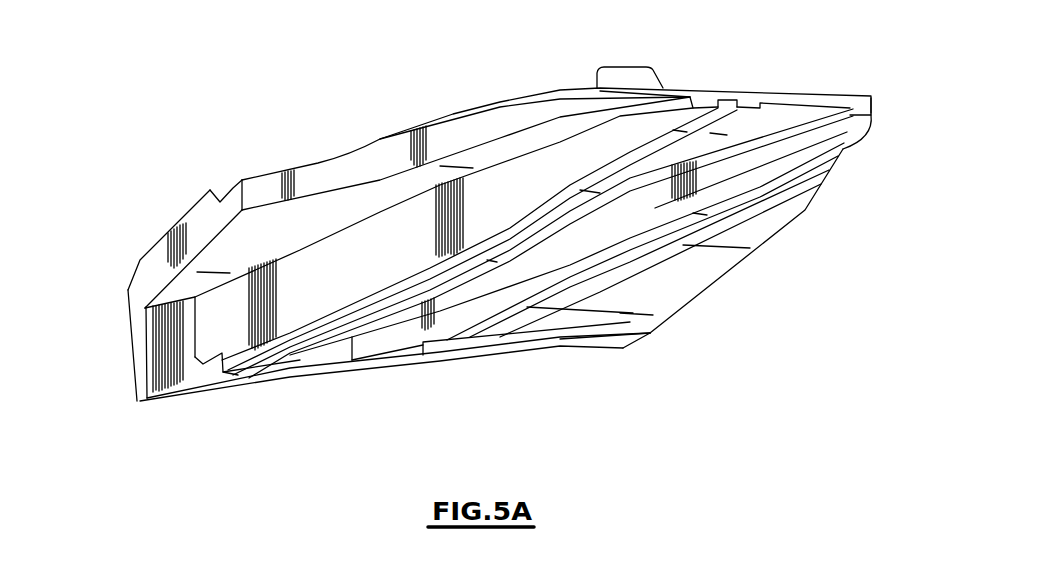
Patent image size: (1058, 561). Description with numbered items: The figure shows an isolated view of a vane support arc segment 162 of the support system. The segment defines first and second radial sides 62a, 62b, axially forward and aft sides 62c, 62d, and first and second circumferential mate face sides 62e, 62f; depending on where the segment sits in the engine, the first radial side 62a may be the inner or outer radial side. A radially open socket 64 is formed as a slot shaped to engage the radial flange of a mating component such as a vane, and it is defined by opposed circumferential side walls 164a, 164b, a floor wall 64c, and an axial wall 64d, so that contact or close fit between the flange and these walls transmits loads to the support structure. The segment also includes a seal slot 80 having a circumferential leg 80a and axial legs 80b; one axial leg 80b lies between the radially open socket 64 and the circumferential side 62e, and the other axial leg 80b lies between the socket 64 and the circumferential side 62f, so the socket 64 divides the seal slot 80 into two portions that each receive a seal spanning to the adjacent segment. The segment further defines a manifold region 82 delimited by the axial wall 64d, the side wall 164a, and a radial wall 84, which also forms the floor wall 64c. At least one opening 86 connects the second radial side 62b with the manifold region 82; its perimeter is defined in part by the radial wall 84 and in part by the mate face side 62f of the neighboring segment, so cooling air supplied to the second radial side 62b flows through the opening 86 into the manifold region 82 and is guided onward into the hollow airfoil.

The first radial side 62a is at (612, 323).
The second radial side 62b is at (221, 195).
The axially forward side 62c is at (787, 97).
The axially aft side 62d is at (136, 365).
The first circumferential mate face side 62e is at (146, 273).
The second circumferential mate face side 62f is at (875, 108).
The radially open socket 64 is at (381, 326).
The floor wall 64c is at (783, 113).
The axial wall 64d is at (320, 360).
The seal slot 80 is at (482, 340).
The circumferential leg 80a is at (215, 368).
The axial legs 80b is at (733, 101).
The manifold region 82 is at (212, 300).
The radial wall 84 is at (258, 228).
The opening 86 is at (367, 165).
The vane support arc segment 162 is at (803, 208).
The circumferential side wall 164a is at (295, 365).
The circumferential side wall 164b is at (420, 340).